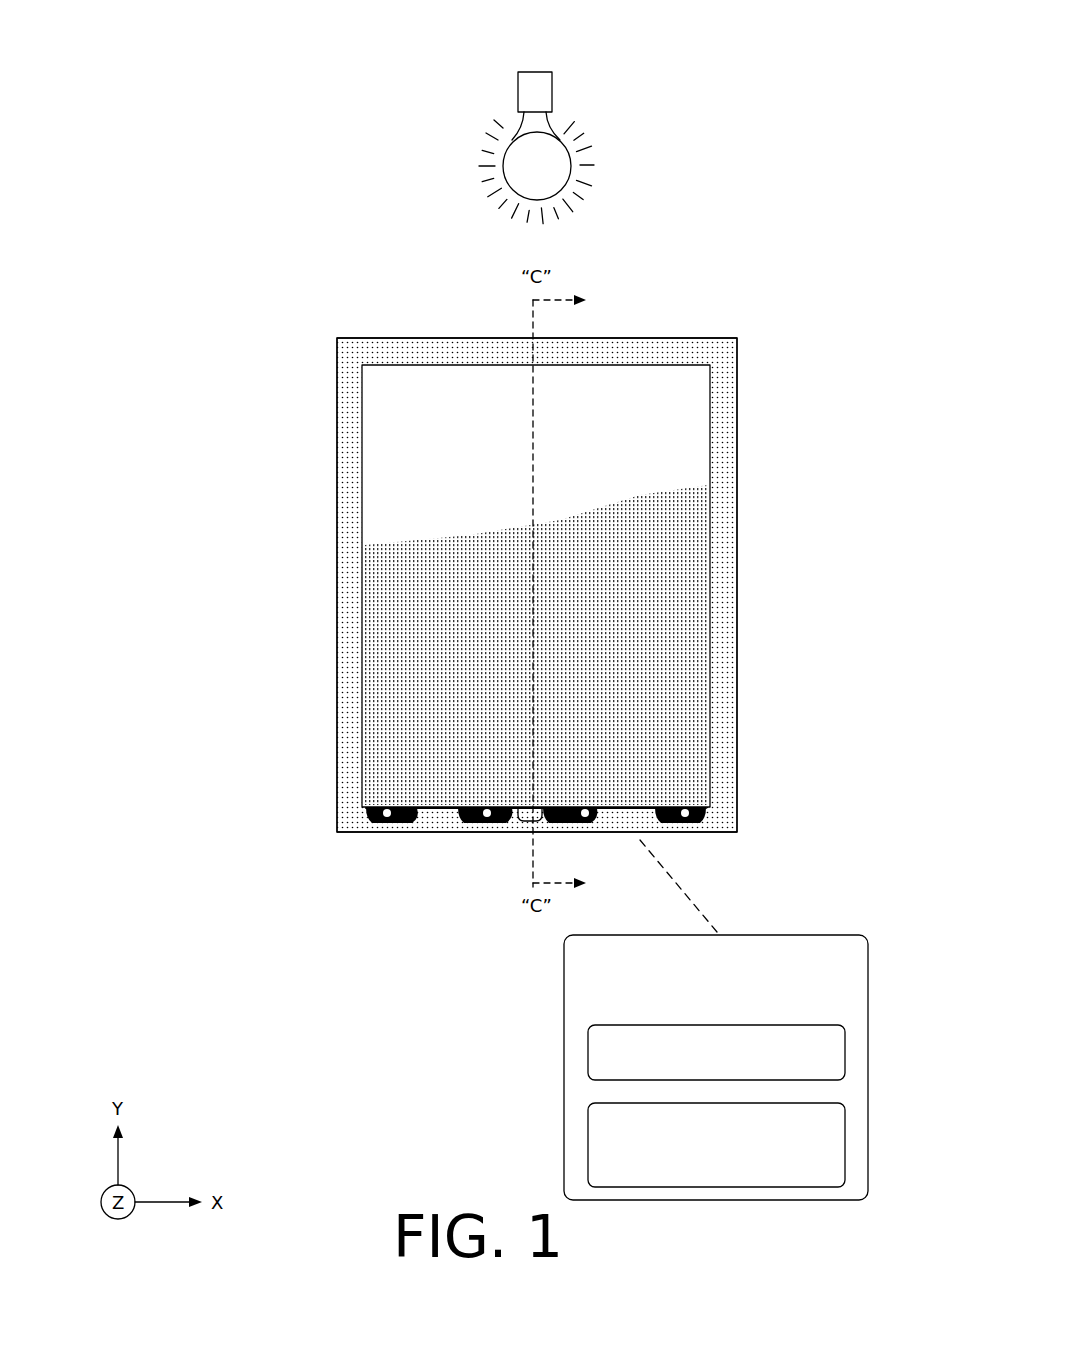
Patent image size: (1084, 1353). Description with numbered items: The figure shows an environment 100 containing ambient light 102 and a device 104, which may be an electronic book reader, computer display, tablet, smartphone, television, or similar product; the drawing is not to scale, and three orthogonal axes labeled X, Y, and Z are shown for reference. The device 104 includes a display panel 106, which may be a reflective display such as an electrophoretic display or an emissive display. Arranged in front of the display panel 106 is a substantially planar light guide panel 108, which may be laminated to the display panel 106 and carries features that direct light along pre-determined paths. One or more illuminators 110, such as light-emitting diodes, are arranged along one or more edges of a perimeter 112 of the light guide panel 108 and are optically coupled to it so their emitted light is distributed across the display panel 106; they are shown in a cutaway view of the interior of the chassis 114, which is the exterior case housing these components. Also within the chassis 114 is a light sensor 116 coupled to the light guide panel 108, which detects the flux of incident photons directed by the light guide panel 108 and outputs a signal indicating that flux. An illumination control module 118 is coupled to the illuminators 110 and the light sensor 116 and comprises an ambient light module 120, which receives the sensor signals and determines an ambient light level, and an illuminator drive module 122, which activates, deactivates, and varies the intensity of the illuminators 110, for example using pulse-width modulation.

The environment 100 is at (796, 76).
The ambient light 102 is at (466, 191).
The device 104 is at (628, 336).
The display panel 106 is at (463, 372).
The light guide panel 108 is at (390, 697).
The illuminators 110 is at (383, 815).
The perimeter 112 is at (712, 430).
The chassis 114 is at (723, 625).
The light sensor 116 is at (520, 822).
The illumination control module 118 is at (716, 1020).
The ambient light module 120 is at (716, 1052).
The illuminator drive module 122 is at (716, 1145).